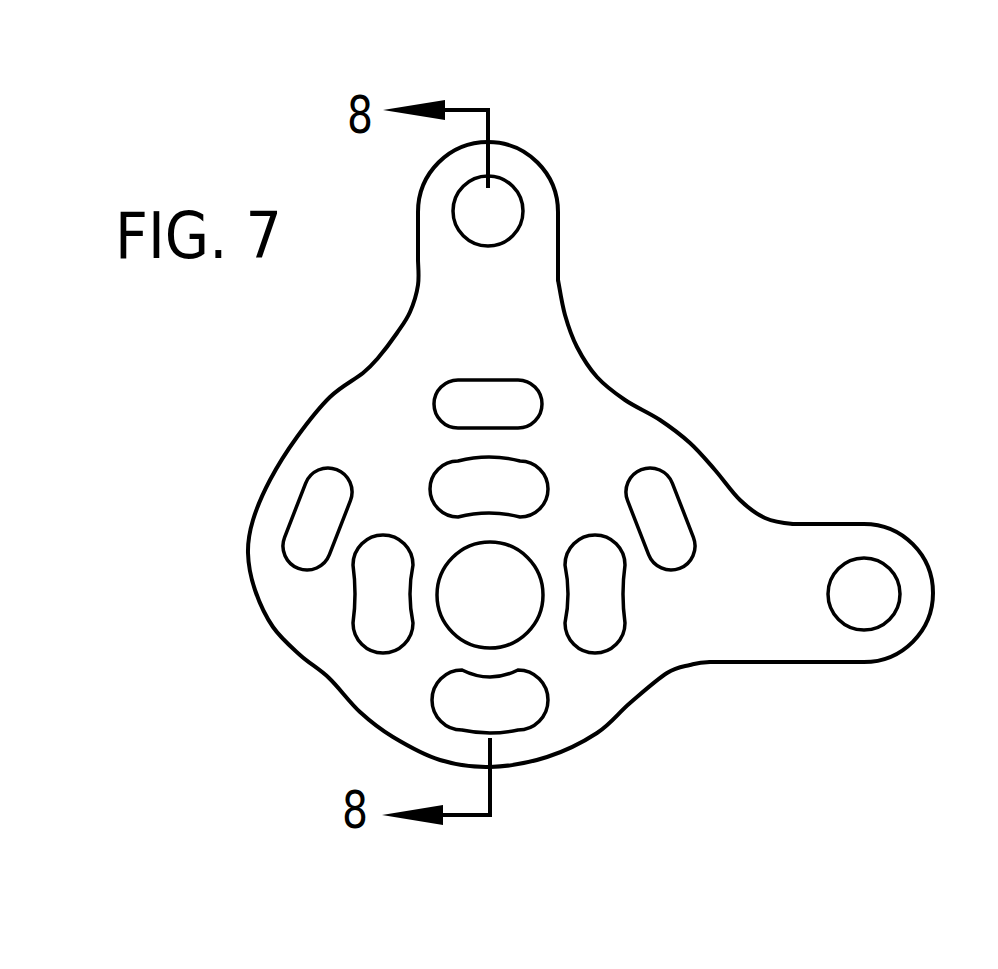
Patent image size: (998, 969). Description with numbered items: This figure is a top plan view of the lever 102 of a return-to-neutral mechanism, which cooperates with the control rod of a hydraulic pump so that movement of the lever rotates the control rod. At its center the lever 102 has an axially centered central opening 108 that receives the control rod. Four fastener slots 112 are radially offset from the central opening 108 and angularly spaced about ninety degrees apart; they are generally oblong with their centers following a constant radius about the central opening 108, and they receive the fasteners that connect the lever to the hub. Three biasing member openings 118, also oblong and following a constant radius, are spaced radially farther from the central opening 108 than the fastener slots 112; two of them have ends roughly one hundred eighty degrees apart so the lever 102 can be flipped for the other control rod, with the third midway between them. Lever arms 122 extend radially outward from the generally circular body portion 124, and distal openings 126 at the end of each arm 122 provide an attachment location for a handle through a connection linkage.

The lever 102 is at (590, 454).
The central opening 108 is at (473, 612).
The fastener slots 112 is at (512, 482).
The biasing member openings 118 is at (465, 390).
The lever arms 122 is at (525, 272).
The body portion 124 is at (593, 385).
The distal openings 126 is at (502, 202).